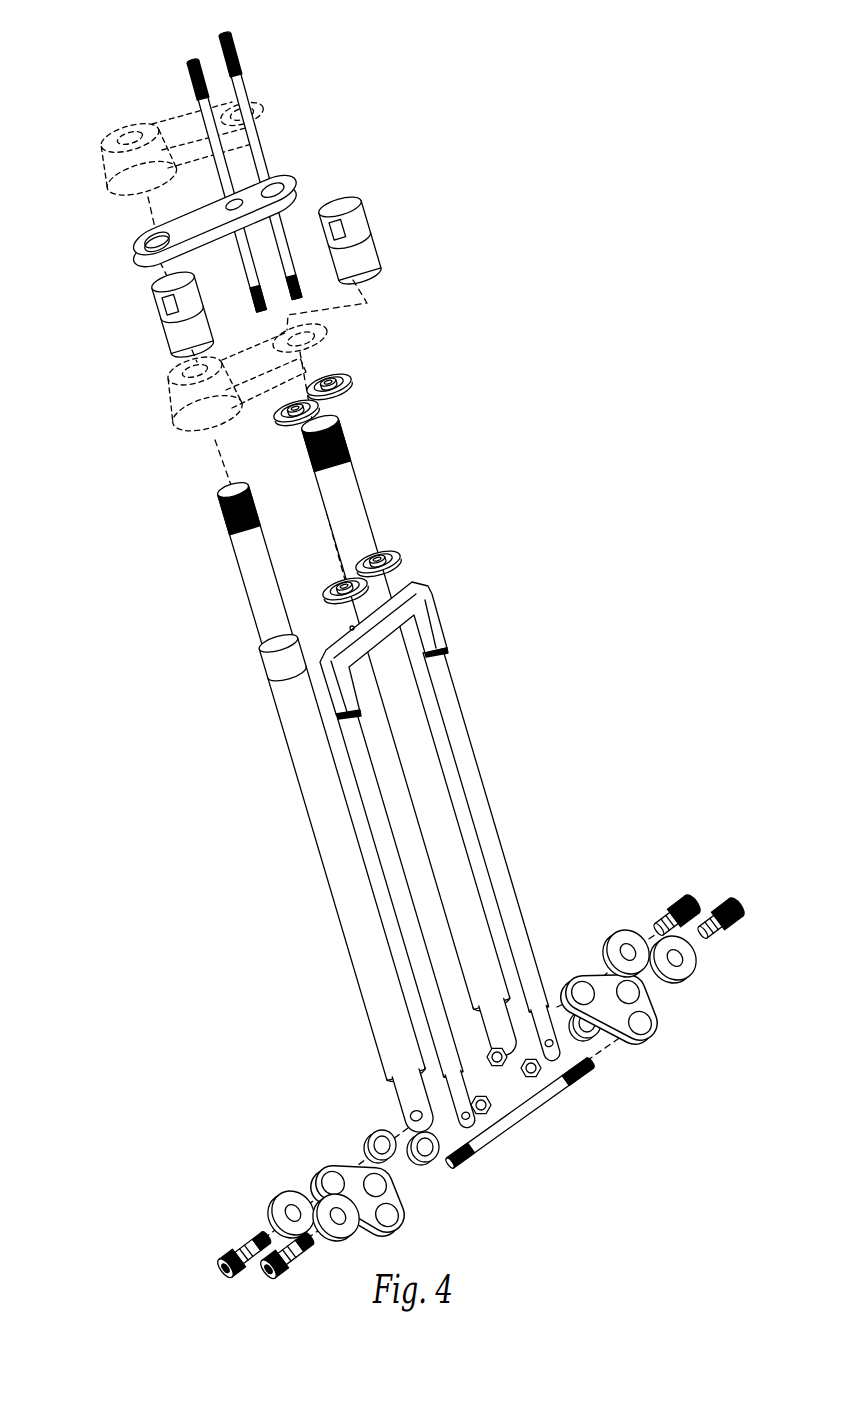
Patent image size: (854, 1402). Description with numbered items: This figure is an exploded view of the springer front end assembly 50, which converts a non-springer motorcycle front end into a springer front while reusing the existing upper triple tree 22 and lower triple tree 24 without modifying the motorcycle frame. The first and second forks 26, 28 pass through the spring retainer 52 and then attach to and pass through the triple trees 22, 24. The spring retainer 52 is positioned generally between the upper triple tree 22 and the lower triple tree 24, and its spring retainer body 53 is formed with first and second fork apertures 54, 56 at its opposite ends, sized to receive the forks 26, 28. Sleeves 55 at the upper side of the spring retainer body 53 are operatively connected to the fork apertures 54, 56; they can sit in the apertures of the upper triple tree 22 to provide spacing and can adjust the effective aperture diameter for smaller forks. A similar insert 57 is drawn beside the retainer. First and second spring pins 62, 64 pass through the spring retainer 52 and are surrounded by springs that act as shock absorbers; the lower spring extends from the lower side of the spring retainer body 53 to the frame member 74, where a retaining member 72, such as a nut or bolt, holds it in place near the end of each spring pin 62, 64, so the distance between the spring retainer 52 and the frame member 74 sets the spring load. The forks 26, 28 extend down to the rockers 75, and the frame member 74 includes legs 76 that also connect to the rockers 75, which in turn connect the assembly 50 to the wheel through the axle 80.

The springer front end assembly 50 is at (503, 468).
The upper triple tree 22 is at (122, 193).
The lower triple tree 24 is at (157, 405).
The first fork member 26 is at (342, 877).
The second fork member 28 is at (352, 497).
The spring retainer 52 is at (195, 223).
The spring retainer body 53 is at (147, 262).
The first fork aperture 54 is at (152, 234).
The sleeve 55 is at (167, 335).
The second fork aperture 56 is at (252, 165).
The cylindrical insert 57 is at (360, 250).
The first spring pin 62 is at (187, 63).
The second spring pin 64 is at (218, 36).
The retaining member 72 is at (390, 552).
The frame member 74 is at (413, 607).
The rocker 75 is at (653, 1004).
The leg 76 is at (457, 737).
The axle 80 is at (523, 1117).